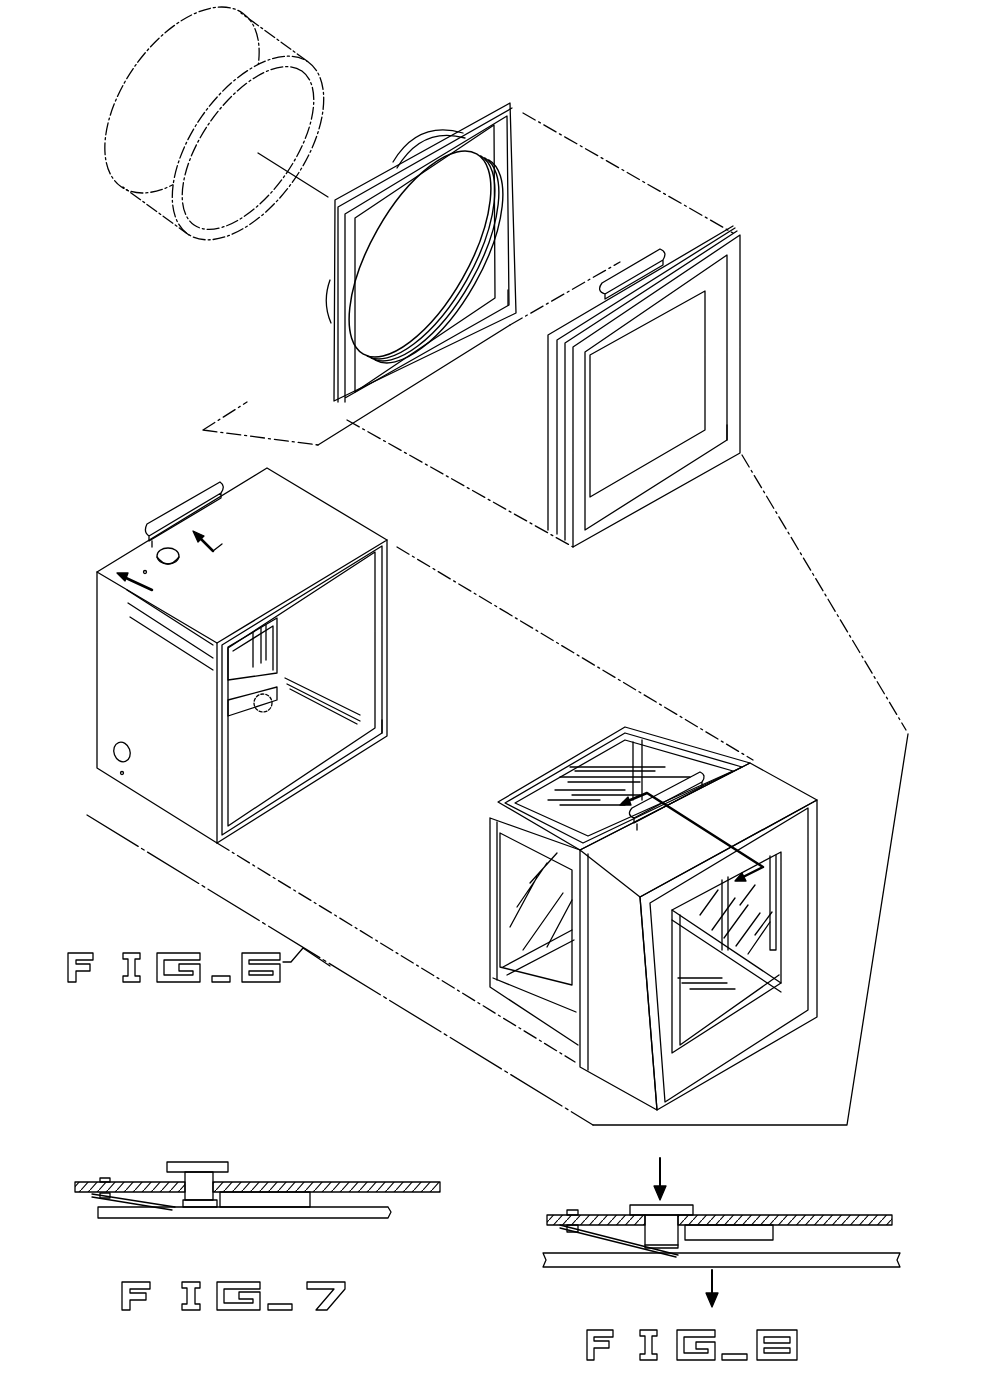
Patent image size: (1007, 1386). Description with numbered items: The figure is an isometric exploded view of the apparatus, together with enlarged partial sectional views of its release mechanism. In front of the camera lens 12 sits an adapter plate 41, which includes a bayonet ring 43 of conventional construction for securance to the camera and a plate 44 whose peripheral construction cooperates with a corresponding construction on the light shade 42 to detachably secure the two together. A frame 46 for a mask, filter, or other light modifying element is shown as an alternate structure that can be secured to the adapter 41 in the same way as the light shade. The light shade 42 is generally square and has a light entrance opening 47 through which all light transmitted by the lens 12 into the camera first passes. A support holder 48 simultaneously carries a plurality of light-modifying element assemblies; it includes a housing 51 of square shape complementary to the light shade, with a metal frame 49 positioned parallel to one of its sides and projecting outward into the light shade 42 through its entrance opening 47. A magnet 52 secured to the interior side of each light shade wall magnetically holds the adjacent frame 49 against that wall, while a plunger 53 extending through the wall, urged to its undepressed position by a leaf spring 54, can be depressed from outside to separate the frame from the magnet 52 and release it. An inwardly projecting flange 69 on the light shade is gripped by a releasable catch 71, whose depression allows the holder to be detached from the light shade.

In FIG. 6, the lens 12 is at (313, 137).
In FIG. 6, the adapter plate 41 is at (452, 239).
In FIG. 6, the bayonet ring 43 is at (428, 133).
In FIG. 6, the plate 44 is at (378, 373).
In FIG. 6, the frame 46 is at (733, 233).
In FIG. 6, the flange 69 is at (512, 272).
In FIG. 6, the releasable catch 71 is at (632, 268).
In FIG. 6, the light shade 42 is at (271, 655).
In FIG. 6, the light entrance opening 47 is at (340, 647).
In FIG. 6, the magnet 52 is at (247, 713).
In FIG. 7, the magnet 52 is at (275, 1198).
In FIG. 8, the magnet 52 is at (732, 1237).
In FIG. 6, the plunger 53 is at (165, 553).
In FIG. 7, the plunger 53 is at (197, 1168).
In FIG. 8, the plunger 53 is at (663, 1212).
In FIG. 7, the leaf spring 54 is at (152, 1200).
In FIG. 6, the support holder 48 is at (664, 906).
In FIG. 6, the frame 49 is at (563, 767).
In FIG. 6, the housing 51 is at (781, 793).